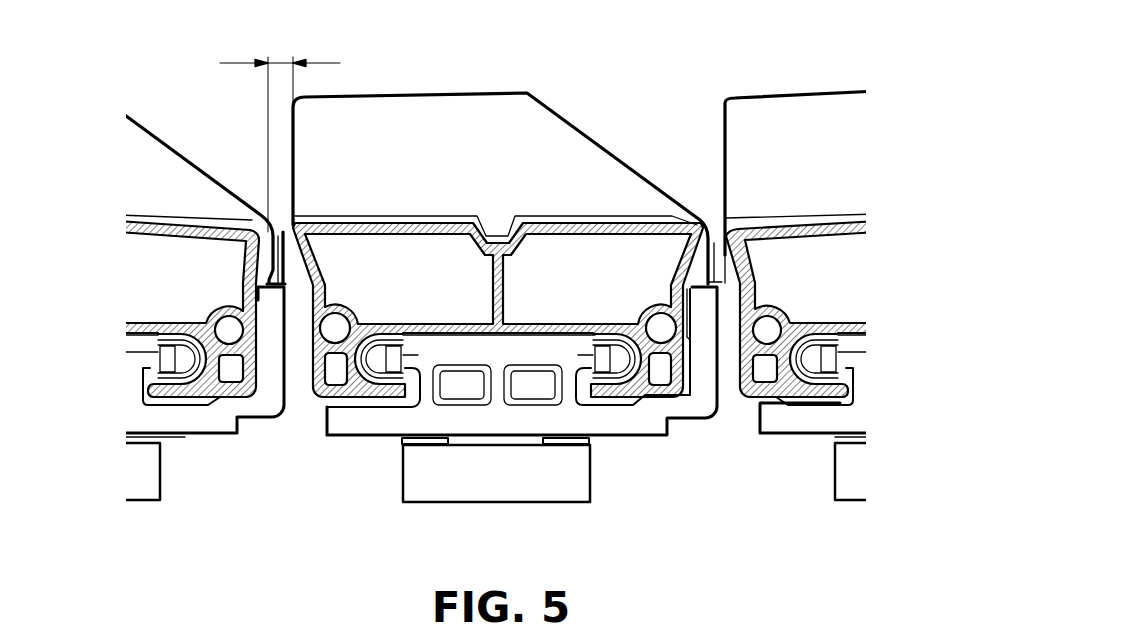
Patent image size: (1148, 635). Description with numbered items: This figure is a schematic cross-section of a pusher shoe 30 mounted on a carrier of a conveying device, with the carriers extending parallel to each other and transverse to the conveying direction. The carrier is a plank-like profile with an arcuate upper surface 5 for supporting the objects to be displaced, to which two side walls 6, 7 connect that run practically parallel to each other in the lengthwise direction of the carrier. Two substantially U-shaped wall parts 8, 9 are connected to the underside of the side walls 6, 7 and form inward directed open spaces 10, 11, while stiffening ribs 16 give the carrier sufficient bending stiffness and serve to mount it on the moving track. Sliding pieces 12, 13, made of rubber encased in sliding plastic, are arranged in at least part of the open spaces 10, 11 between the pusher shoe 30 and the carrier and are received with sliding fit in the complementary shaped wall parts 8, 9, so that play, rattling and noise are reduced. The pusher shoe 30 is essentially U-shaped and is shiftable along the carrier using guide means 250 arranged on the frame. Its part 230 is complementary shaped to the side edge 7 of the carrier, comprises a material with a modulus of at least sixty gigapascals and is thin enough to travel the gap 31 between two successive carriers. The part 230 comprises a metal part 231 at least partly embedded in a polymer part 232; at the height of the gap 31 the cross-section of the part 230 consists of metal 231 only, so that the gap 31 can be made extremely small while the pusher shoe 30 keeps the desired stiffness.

The arcuate upper surface 5 is at (420, 230).
The side wall 6 is at (324, 289).
The side wall 7 is at (680, 290).
The U-shaped wall part 8 is at (384, 415).
The U-shaped wall part 9 is at (610, 415).
The open space 10 is at (403, 309).
The open space 11 is at (555, 310).
The sliding piece 12 is at (383, 358).
The sliding piece 13 is at (610, 358).
The stiffening rib 16 is at (493, 292).
The pusher shoe 30 is at (575, 114).
The gap 31 is at (279, 58).
The part of the pusher shoe 230 is at (714, 419).
The metal part 231 is at (738, 256).
The polymer part 232 is at (706, 310).
The guide means 250 is at (437, 497).